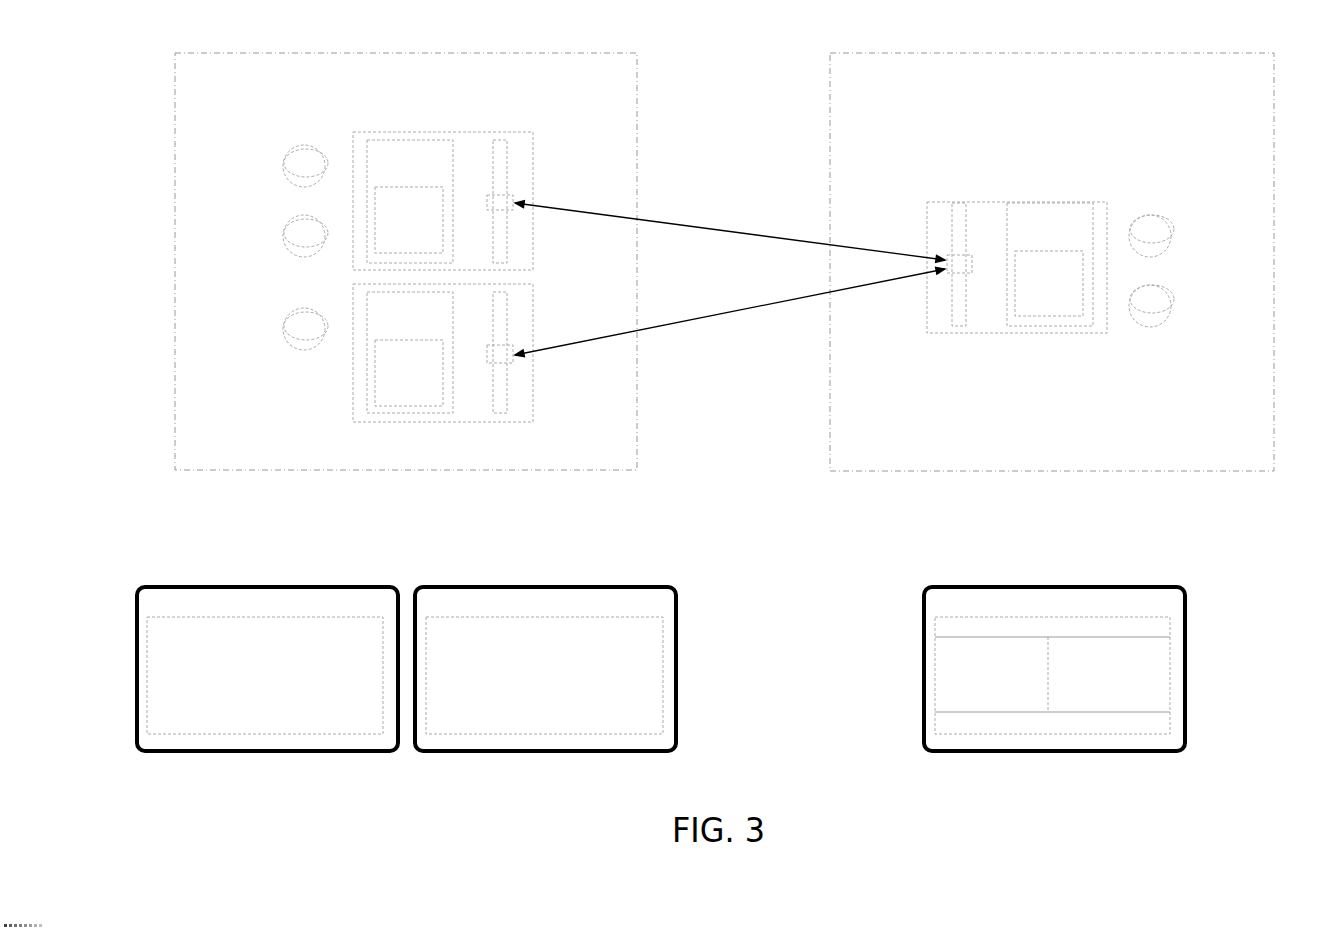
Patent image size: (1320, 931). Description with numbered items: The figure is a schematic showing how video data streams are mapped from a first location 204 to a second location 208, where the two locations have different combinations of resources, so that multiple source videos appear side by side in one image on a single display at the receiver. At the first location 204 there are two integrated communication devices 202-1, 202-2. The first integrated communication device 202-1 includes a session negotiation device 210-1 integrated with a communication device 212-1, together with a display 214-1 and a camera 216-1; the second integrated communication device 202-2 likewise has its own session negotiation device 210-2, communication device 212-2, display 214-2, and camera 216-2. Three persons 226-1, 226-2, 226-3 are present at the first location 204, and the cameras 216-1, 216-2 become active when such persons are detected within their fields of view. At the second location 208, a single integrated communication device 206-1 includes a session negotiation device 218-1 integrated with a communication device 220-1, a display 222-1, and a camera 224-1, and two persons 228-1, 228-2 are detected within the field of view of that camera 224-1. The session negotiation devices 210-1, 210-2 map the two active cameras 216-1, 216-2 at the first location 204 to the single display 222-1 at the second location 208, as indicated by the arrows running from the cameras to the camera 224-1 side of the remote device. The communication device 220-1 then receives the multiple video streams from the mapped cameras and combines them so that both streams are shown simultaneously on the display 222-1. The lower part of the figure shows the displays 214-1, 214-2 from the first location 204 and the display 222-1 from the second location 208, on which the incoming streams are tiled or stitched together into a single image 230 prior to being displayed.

The first location 204 is at (406, 52).
The second location 208 is at (1052, 52).
The integrated communication device 202-1 is at (442, 422).
The integrated communication device 202-2 is at (440, 132).
The session negotiation device 210-1 is at (409, 373).
The session negotiation device 210-2 is at (409, 220).
The communication device 212-1 is at (410, 352).
The communication device 212-2 is at (410, 201).
The display 214-1 is at (507, 305).
The display 214-2 is at (507, 163).
The camera 216-1 is at (513, 352).
The camera 216-2 is at (513, 195).
The person 226-1 is at (286, 328).
The person 226-2 is at (286, 235).
The person 226-3 is at (286, 165).
The integrated communication device 206-1 is at (1017, 196).
The communication device 220-1 is at (1050, 264).
The session negotiation device 218-1 is at (1049, 283).
The display 222-1 is at (952, 223).
The camera 224-1 is at (947, 256).
The person 228-1 is at (1173, 240).
The person 228-2 is at (1173, 310).
The single image 230 is at (1157, 672).